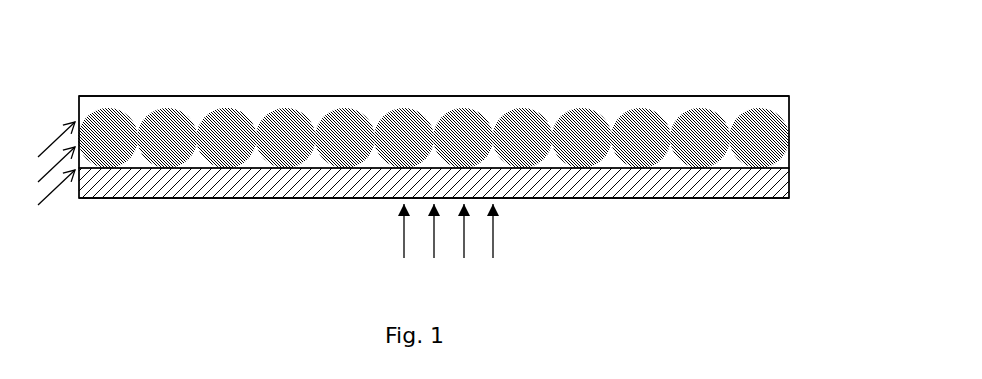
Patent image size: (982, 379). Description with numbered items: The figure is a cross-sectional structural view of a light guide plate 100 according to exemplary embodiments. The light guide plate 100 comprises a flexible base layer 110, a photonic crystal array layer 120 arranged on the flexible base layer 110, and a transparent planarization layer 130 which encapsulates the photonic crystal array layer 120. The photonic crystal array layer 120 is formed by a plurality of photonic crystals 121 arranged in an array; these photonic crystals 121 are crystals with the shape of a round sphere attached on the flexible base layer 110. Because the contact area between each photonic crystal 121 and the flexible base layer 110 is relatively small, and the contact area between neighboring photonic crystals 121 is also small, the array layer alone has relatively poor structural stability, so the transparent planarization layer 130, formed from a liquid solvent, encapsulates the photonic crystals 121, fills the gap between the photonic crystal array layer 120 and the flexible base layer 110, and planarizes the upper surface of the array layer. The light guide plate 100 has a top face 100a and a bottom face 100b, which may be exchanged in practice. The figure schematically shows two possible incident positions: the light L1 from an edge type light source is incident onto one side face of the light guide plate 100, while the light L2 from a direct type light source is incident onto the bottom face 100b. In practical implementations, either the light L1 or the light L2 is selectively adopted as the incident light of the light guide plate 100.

The light guide plate 100 is at (683, 238).
The top face 100a is at (648, 96).
The bottom face 100b is at (553, 198).
The flexible base layer 110 is at (138, 195).
The photonic crystal array layer 120 is at (485, 112).
The photonic crystal 121 is at (228, 140).
The transparent planarization layer 130 is at (315, 112).
The light from edge type light source L1 is at (56, 183).
The light from direct type light source L2 is at (448, 248).